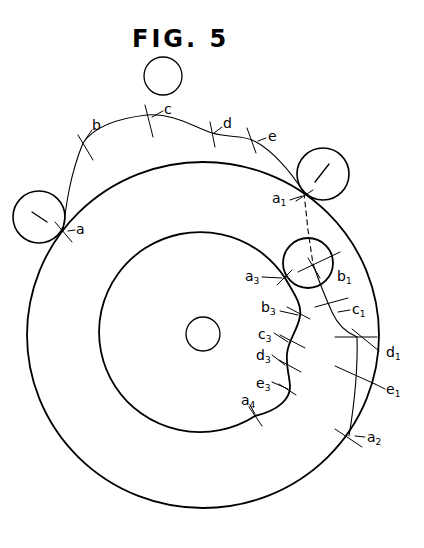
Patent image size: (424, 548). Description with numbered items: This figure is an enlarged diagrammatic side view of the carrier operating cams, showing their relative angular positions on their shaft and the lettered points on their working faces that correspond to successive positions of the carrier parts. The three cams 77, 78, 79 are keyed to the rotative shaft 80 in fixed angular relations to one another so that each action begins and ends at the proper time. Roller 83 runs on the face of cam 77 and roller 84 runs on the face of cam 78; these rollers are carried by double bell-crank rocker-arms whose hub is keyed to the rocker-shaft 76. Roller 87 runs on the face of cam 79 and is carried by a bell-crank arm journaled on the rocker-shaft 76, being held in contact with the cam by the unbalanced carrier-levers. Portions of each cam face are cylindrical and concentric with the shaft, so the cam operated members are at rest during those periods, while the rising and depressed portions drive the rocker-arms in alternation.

The rocker-shaft 76 is at (163, 76).
The cam 77 is at (210, 275).
The cam 78 is at (203, 335).
The cam 79 is at (199, 332).
The rotative shaft 80 is at (203, 334).
The roller 83 is at (33, 197).
The roller 84 is at (343, 163).
The roller 87 is at (322, 248).